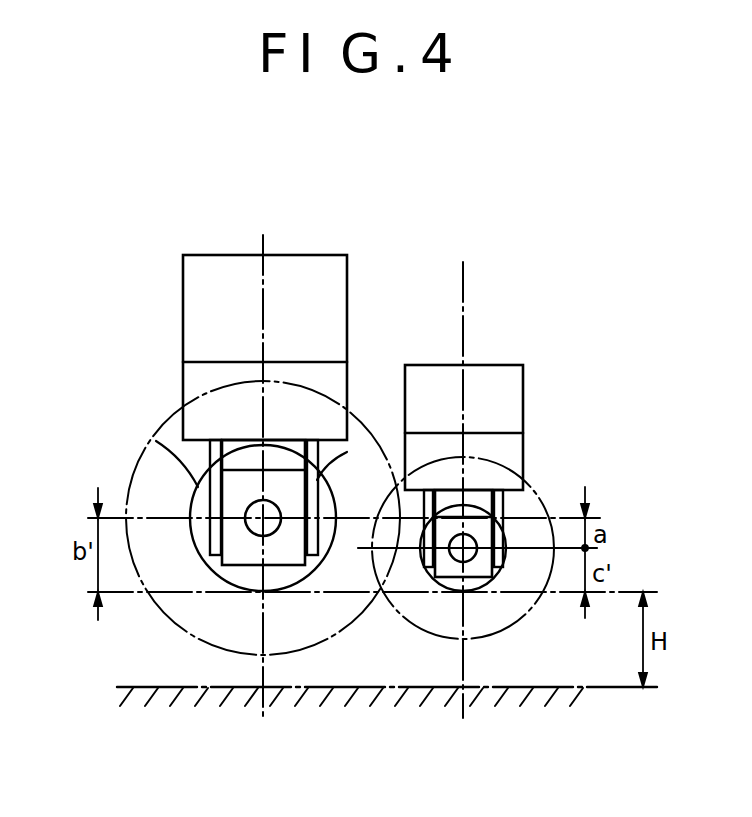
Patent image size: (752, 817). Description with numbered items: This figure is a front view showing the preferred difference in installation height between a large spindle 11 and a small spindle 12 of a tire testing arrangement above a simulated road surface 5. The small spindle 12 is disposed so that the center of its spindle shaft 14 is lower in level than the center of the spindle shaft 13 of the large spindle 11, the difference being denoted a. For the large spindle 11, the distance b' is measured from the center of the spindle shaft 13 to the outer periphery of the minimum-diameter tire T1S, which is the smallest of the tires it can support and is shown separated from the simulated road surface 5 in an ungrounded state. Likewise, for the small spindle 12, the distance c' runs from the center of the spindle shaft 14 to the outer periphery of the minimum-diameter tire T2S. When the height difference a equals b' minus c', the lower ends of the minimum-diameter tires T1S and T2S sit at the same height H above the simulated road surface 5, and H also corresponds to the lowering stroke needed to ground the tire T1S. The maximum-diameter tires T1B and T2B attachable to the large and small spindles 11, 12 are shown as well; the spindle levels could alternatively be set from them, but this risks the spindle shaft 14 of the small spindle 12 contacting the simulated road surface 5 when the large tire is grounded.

The simulated road surface 5 is at (150, 686).
The large spindle 11 is at (237, 470).
The small spindle 12 is at (473, 517).
The spindle shaft 13 is at (278, 505).
The spindle shaft 14 is at (477, 537).
The maximum-diameter tire T1B is at (137, 472).
The minimum-diameter tire T1S is at (152, 440).
The maximum-diameter tire T2B is at (425, 630).
The minimum-diameter tire T2S is at (526, 617).